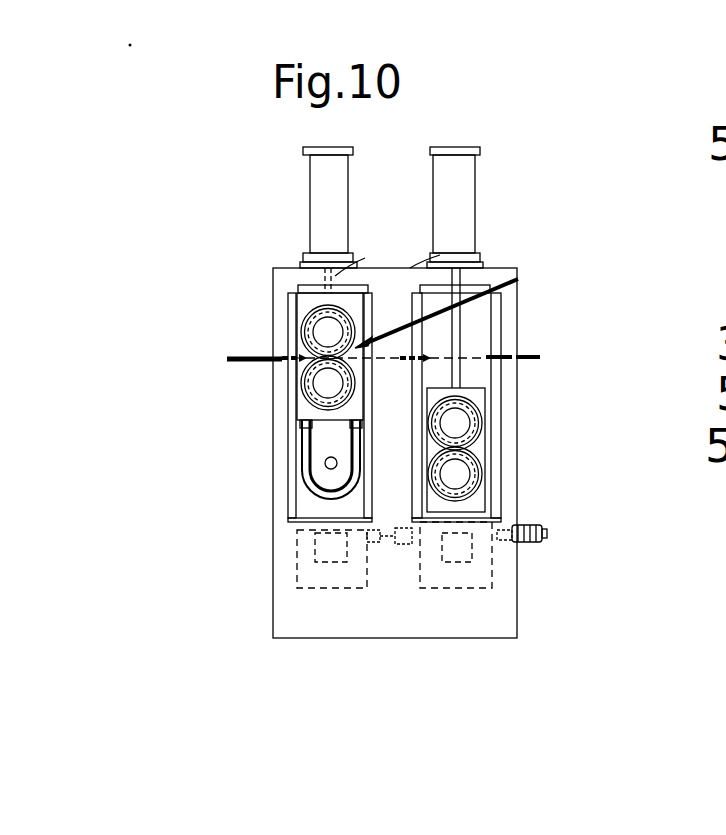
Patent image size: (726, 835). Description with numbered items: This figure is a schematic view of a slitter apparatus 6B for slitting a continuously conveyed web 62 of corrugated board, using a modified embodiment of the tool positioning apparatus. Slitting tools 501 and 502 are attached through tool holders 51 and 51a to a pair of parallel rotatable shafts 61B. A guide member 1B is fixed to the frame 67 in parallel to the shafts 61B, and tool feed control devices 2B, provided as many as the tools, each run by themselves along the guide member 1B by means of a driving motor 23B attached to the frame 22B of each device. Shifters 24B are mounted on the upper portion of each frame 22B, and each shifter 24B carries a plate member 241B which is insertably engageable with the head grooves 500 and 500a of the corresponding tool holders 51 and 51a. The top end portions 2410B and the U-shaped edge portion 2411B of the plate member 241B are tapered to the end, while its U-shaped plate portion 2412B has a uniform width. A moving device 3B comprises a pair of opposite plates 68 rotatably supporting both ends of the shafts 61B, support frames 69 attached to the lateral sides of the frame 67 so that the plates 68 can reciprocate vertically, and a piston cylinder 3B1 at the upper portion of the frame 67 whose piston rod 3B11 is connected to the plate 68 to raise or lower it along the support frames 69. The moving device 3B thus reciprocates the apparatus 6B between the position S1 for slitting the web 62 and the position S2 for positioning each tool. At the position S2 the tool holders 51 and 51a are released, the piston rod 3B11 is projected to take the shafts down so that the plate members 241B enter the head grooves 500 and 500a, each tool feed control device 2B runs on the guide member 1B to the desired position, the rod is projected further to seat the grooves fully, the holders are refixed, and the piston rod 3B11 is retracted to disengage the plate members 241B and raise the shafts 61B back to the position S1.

The moving device 3B is at (389, 192).
The piston cylinder 3B1 is at (437, 203).
The piston rod 3B11 is at (410, 268).
The shafts 61B is at (290, 410).
The slitter apparatus 6B is at (503, 297).
The slitting tool 502 is at (320, 308).
The tool holder 51 is at (298, 393).
The tool holder 51a is at (305, 313).
The web 62 is at (302, 345).
The head groove 500a is at (328, 278).
The slitting tool 501 is at (227, 360).
The head groove 500 is at (302, 380).
The plates 68 is at (292, 422).
The support frames 69 is at (440, 352).
The frame 67 is at (520, 278).
The slitting position S1 is at (440, 335).
The top end portions 2410B is at (300, 432).
The shifter 24B is at (293, 458).
The plate member 241B is at (300, 474).
The U-shaped plate portion 2412B is at (303, 500).
The U-shaped edge portion 2411B is at (335, 468).
The guide member 1B is at (293, 578).
The tool feed control device 2B is at (320, 557).
The frame 22B is at (345, 600).
The driving motor 23B is at (330, 540).
The tool positioning position S2 is at (508, 545).